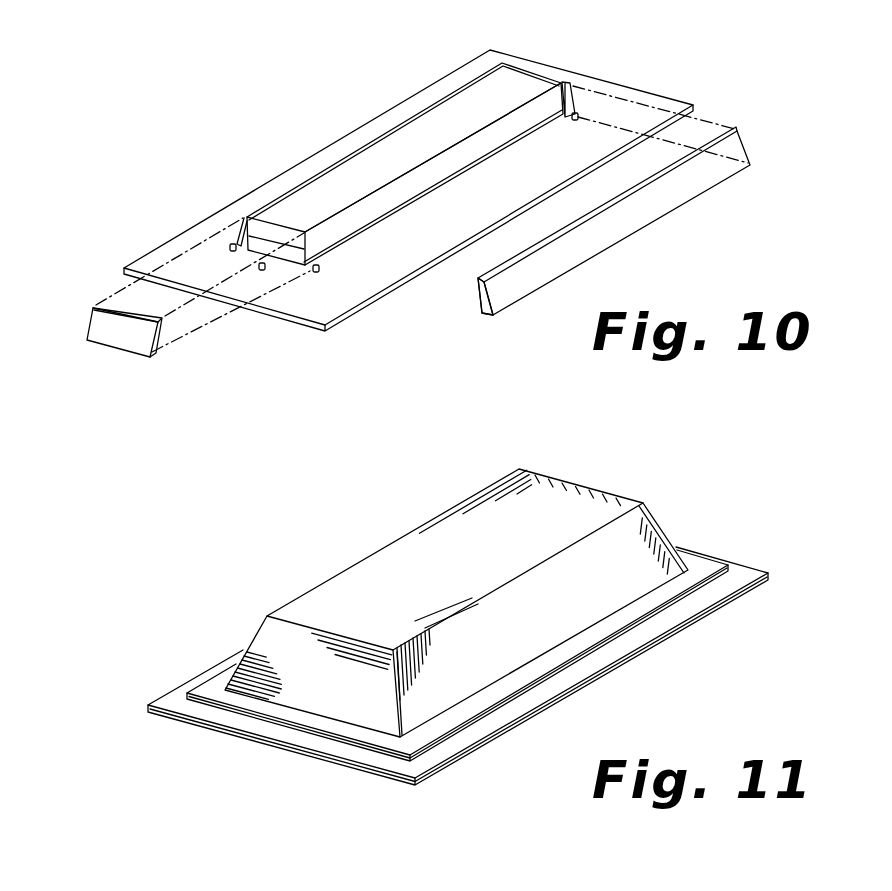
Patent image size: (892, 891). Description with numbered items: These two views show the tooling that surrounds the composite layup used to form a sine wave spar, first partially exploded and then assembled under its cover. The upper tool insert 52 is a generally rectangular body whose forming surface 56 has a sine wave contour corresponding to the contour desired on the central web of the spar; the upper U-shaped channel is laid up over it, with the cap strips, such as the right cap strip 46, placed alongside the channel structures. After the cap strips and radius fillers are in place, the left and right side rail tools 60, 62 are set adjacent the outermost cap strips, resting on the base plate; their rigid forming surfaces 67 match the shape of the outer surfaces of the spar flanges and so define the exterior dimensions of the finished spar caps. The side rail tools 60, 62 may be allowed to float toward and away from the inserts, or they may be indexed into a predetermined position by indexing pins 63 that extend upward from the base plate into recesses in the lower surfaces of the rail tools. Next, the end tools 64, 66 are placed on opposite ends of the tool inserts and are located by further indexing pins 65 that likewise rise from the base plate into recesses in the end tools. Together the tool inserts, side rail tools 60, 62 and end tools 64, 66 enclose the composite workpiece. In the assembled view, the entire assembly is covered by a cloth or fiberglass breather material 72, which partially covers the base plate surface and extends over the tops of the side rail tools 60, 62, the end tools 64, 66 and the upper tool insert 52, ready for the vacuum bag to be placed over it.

In FIG. 10, the right cap strip 46 is at (507, 128).
In FIG. 10, the upper tool insert 52 is at (512, 89).
In FIG. 10, the forming surface 56 is at (663, 98).
In FIG. 11, the forming surface 56 is at (225, 713).
In FIG. 10, the left side rail tool 60 is at (240, 236).
In FIG. 10, the right side rail tool 62 is at (672, 186).
In FIG. 10, the indexing pins 63 is at (317, 272).
In FIG. 10, the left end tool 64 is at (112, 333).
In FIG. 10, the indexing pins 65 is at (261, 272).
In FIG. 10, the right end tool 66 is at (580, 96).
In FIG. 10, the forming surfaces 67 is at (480, 300).
In FIG. 11, the breather material 72 is at (342, 724).